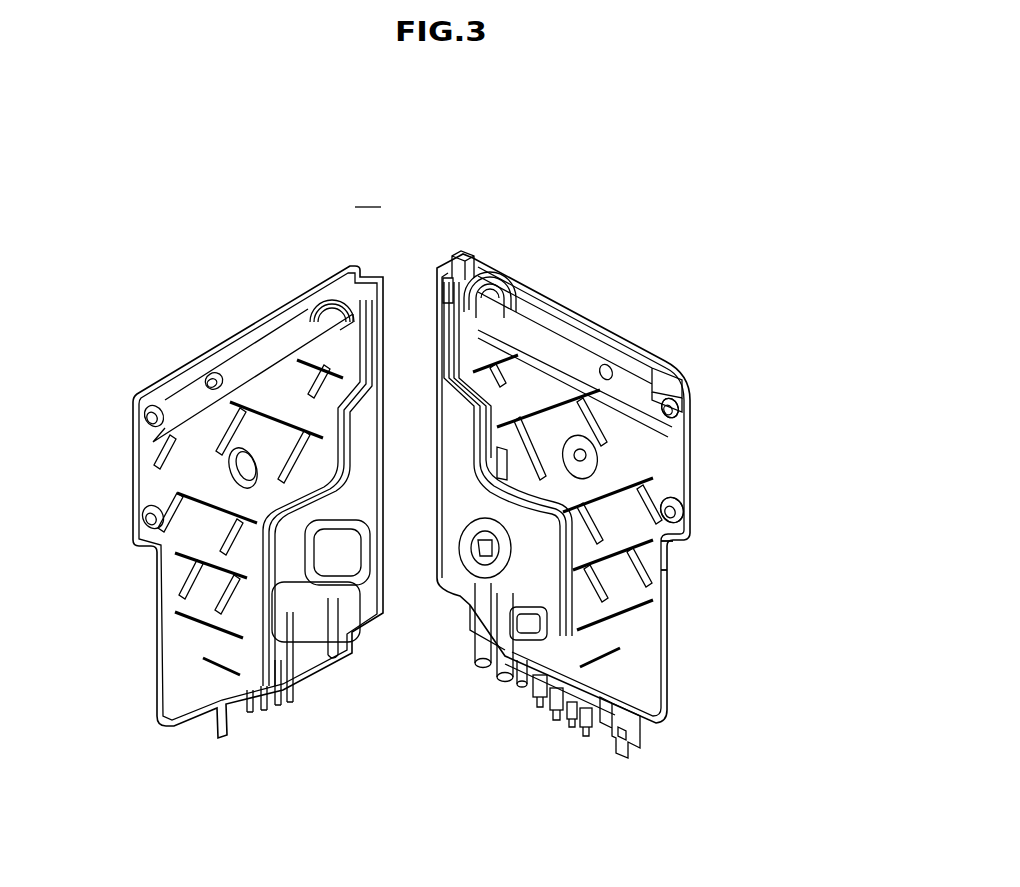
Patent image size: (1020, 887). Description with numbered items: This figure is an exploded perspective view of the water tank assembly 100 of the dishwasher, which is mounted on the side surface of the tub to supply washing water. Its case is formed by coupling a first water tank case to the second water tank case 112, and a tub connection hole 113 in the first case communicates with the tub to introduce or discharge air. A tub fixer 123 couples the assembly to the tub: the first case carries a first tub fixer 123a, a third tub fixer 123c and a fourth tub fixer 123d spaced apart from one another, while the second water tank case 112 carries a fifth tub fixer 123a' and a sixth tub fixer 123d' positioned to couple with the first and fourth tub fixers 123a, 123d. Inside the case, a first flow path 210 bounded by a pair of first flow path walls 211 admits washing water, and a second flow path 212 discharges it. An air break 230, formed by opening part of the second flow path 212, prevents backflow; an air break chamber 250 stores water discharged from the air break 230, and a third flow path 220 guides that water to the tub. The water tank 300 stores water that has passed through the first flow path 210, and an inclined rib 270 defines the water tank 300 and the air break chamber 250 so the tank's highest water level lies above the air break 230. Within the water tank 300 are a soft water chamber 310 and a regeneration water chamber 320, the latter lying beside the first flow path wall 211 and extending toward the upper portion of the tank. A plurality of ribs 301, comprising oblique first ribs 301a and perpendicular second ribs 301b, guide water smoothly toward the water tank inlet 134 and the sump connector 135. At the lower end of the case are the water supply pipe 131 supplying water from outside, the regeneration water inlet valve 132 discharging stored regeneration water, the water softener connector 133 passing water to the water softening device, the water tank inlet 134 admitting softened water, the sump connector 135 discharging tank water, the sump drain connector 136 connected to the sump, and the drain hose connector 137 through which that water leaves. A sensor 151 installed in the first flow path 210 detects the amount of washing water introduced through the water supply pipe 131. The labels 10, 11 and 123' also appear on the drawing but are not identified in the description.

The water tank assembly 100 is at (368, 198).
The housing 10 is at (592, 319).
The bar of housing 11 is at (540, 296).
The second water tank case 112 is at (268, 318).
The tub connection hole 113 is at (365, 540).
The tub fixer 123 is at (724, 457).
The first tub fixer 123a is at (647, 434).
The third tub fixer 123c is at (676, 412).
The fourth tub fixer 123d is at (697, 510).
The fastening portion of cover 123' is at (150, 384).
The fifth tub fixer 123a' is at (170, 468).
The sixth tub fixer 123d' is at (157, 416).
The water supply pipe 131 is at (533, 690).
The regeneration water inlet valve 132 is at (552, 705).
The water softener connector 133 is at (568, 722).
The water tank inlet 134 is at (582, 737).
The sump connector 135 is at (592, 742).
The sump drain connector 136 is at (497, 672).
The drain hose connector 137 is at (474, 650).
The sensor 151 is at (520, 673).
The first flow path 210 is at (443, 333).
The first flow path wall 211 is at (440, 508).
The second flow path 212 is at (455, 522).
The third flow path 220 is at (450, 272).
The air break 230 is at (476, 272).
The air break chamber 250 is at (498, 283).
The inclined rib 270 is at (503, 337).
The water tank 300 is at (524, 397).
The ribs 301 is at (742, 562).
The first rib 301a is at (668, 545).
The second rib 301b is at (660, 575).
The soft water chamber 310 is at (571, 616).
The regeneration water chamber 320 is at (523, 549).